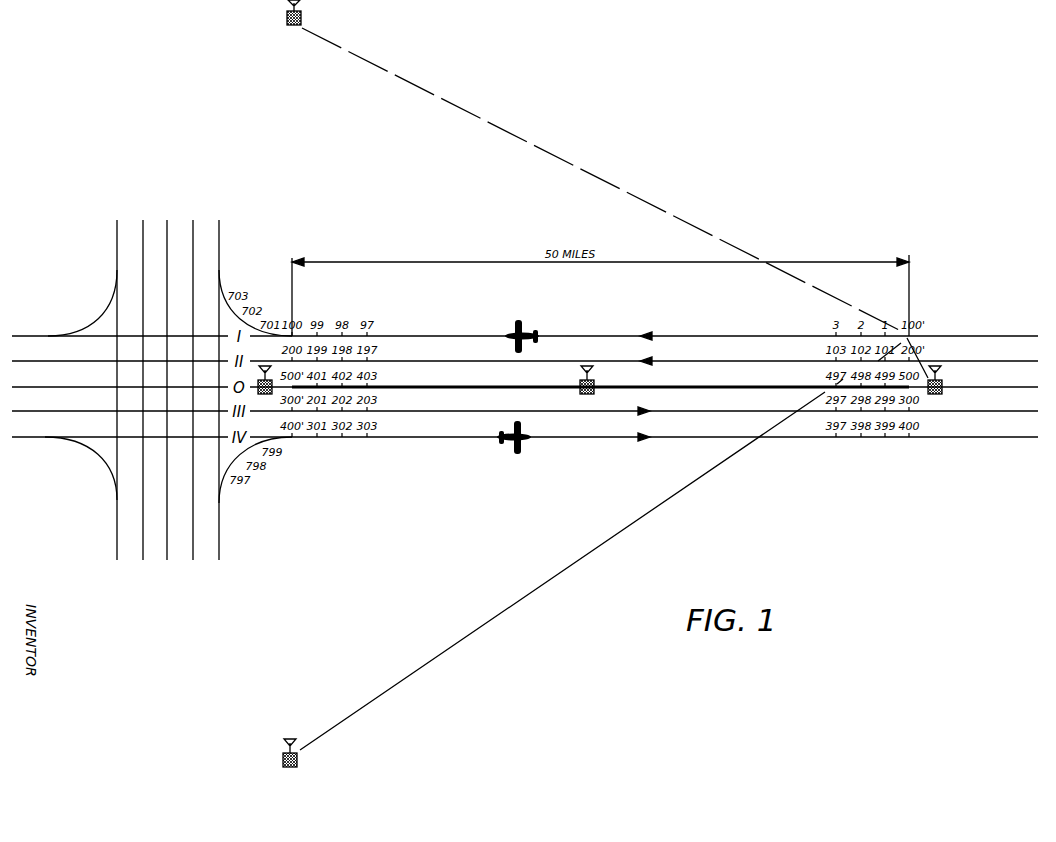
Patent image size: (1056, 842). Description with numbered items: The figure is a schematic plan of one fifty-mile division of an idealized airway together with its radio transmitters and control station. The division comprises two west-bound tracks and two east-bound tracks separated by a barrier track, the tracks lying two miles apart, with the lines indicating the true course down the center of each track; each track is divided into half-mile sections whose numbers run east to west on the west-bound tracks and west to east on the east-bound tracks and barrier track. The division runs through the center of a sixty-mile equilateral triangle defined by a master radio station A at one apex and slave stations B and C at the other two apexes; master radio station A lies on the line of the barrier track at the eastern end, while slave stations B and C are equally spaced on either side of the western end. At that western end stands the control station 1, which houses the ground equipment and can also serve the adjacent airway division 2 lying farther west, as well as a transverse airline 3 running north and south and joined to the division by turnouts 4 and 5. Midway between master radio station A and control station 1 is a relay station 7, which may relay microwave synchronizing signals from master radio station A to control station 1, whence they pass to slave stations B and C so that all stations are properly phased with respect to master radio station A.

The control station 1 is at (258, 389).
The airway division 2 is at (33, 336).
The transverse airline 3 is at (219, 230).
The turnout 4 is at (226, 290).
The turnout 5 is at (221, 492).
The relay station 7 is at (588, 396).
The master radio station A is at (944, 387).
The slave station B is at (301, 20).
The slave station C is at (298, 761).